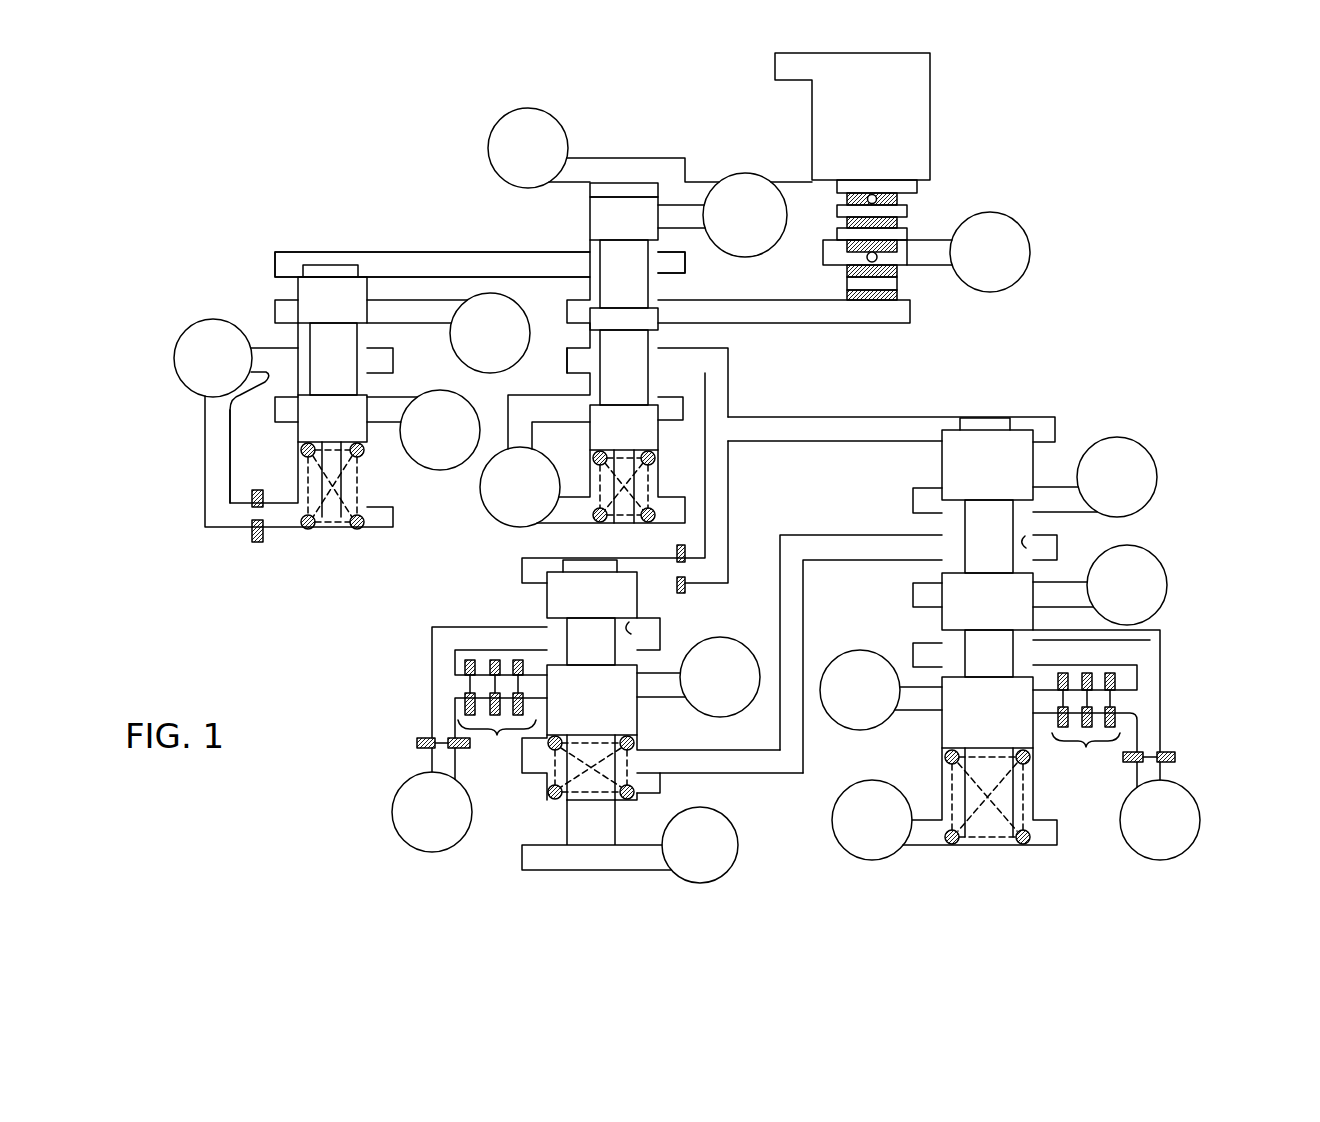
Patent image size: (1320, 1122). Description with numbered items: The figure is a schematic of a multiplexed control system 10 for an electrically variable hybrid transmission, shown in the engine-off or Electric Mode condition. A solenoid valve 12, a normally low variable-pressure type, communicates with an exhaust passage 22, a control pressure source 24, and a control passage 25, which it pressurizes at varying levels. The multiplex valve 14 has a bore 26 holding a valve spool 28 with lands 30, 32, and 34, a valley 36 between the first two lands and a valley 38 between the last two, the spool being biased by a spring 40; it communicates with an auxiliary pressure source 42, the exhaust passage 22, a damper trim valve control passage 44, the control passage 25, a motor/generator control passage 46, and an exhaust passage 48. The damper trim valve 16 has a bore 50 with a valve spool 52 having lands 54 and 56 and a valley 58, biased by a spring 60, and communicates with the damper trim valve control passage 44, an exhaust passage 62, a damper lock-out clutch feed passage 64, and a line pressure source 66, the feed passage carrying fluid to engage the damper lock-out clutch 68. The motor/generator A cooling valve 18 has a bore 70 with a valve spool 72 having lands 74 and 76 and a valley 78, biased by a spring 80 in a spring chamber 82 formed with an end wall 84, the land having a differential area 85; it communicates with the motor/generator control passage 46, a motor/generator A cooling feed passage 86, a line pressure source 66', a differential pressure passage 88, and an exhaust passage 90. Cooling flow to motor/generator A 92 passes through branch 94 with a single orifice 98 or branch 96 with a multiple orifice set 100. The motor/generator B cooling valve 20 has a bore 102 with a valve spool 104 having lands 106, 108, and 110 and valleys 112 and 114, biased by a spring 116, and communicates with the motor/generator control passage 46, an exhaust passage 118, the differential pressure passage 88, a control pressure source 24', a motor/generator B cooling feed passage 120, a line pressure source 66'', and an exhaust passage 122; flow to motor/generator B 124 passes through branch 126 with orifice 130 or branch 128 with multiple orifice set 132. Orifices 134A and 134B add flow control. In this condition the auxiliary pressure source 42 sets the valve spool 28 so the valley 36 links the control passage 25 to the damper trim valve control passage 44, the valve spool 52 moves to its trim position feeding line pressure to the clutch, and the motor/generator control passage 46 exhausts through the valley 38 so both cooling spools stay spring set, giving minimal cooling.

The multiplexed control system 10 is at (631, 92).
The solenoid valve 12 is at (960, 146).
The multiplex valve 14 is at (654, 136).
The damper trim valve 16 is at (342, 216).
The motor/generator A cooling valve 18 is at (570, 876).
The motor/generator B cooling valve 20 is at (1005, 866).
The exhaust passage 22 is at (748, 175).
The control pressure source 24 is at (996, 252).
The control pressure source 24' is at (1136, 585).
The control passage 25 is at (868, 325).
The bore 26 is at (598, 192).
The valve spool 28 is at (648, 192).
The land 30 is at (624, 218).
The land 32 is at (578, 316).
The land 34 is at (624, 427).
The valley 36 is at (656, 286).
The valley 38 is at (583, 361).
The spring 40 is at (655, 511).
The auxiliary pressure source 42 is at (490, 147).
The damper trim valve control passage 44 is at (402, 251).
The motor/generator control passage 46 is at (730, 383).
The exhaust passage 48 is at (501, 526).
The bore 50 is at (314, 340).
The valve spool 52 is at (313, 278).
The land 54 is at (321, 300).
The land 56 is at (321, 418).
The valley 58 is at (383, 360).
The spring 60 is at (362, 523).
The exhaust passage 62 is at (397, 325).
The damper lock-out clutch feed passage 64 is at (268, 386).
The line pressure source 66 is at (423, 456).
The line pressure source 66' is at (704, 655).
The line pressure source 66'' is at (881, 661).
The damper lock-out clutch 68 is at (176, 359).
The bore 70 is at (638, 628).
The valve spool 72 is at (556, 595).
The land 74 is at (592, 595).
The land 76 is at (592, 676).
The valley 78 is at (660, 648).
The spring 80 is at (641, 739).
The spring chamber 82 is at (547, 803).
The end wall 84 is at (641, 796).
The differential area 85 is at (546, 752).
The motor/generator A cooling feed passage 86 is at (430, 641).
The differential pressure passage 88 is at (818, 535).
The exhaust passage 90 is at (631, 872).
The motor/generator A 92 is at (419, 851).
The branch 94 is at (453, 623).
The branch 96 is at (506, 664).
The orifice 98 is at (417, 744).
The multiple orifice set 100 is at (497, 740).
The bore 102 is at (1040, 546).
The valve spool 104 is at (1026, 430).
The land 106 is at (987, 465).
The land 108 is at (973, 601).
The land 110 is at (987, 712).
The valley 112 is at (962, 527).
The valley 114 is at (962, 657).
The spring 116 is at (955, 848).
The exhaust passage 118 is at (1161, 478).
The motor/generator B cooling feed passage 120 is at (1140, 673).
The exhaust passage 122 is at (920, 849).
The motor/generator B 124 is at (1200, 819).
The branch 126 is at (1161, 644).
The branch 128 is at (1150, 721).
The orifice 130 is at (1178, 756).
The multiple orifice set 132 is at (1086, 756).
The orifice 134A is at (676, 551).
The orifice 134B is at (253, 541).